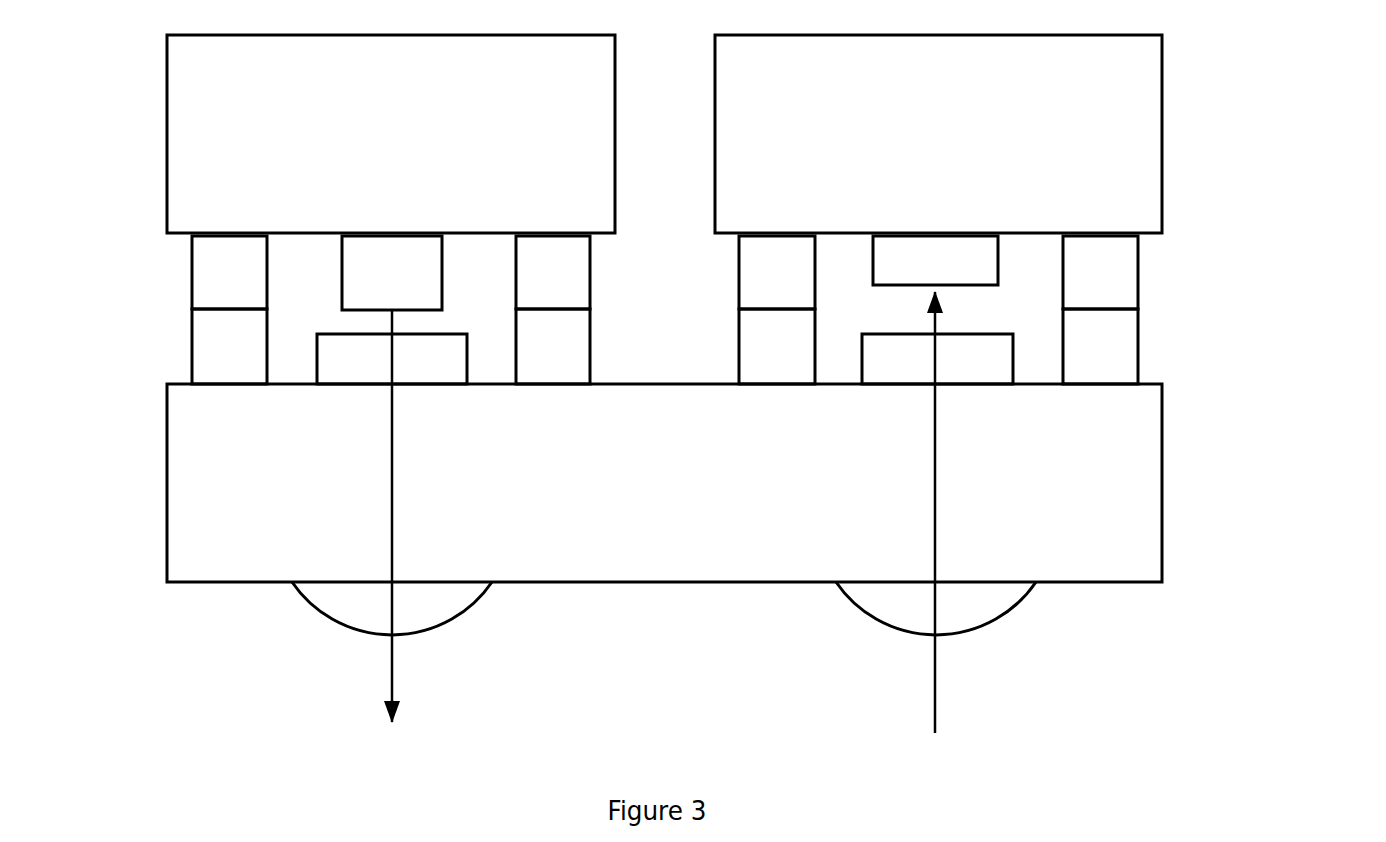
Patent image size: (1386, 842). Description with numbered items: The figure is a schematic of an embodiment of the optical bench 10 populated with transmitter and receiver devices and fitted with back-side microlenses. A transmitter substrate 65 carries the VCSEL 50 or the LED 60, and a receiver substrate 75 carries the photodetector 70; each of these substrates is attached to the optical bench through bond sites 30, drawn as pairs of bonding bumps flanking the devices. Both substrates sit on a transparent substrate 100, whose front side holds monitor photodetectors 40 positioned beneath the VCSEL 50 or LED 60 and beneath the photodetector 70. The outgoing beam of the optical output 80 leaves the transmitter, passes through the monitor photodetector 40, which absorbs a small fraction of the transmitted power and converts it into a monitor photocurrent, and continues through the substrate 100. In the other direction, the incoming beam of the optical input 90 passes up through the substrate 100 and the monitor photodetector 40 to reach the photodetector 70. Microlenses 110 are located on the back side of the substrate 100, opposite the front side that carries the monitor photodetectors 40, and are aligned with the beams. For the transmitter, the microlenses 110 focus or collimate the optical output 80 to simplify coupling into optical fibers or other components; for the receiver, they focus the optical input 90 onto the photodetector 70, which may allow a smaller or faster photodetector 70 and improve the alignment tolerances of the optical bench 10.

The optical bench 10 is at (1210, 364).
The bond site 30 is at (130, 310).
The monitor photodetector 40 is at (665, 359).
The VCSEL 50 is at (392, 273).
The LED 60 is at (392, 273).
The substrate 65 is at (391, 134).
The photodetector 70 is at (935, 260).
The substrate 75 is at (938, 134).
The optical output 80 is at (392, 548).
The optical input 90 is at (942, 539).
The substrate 100 is at (664, 483).
The microlenses 110 is at (316, 618).